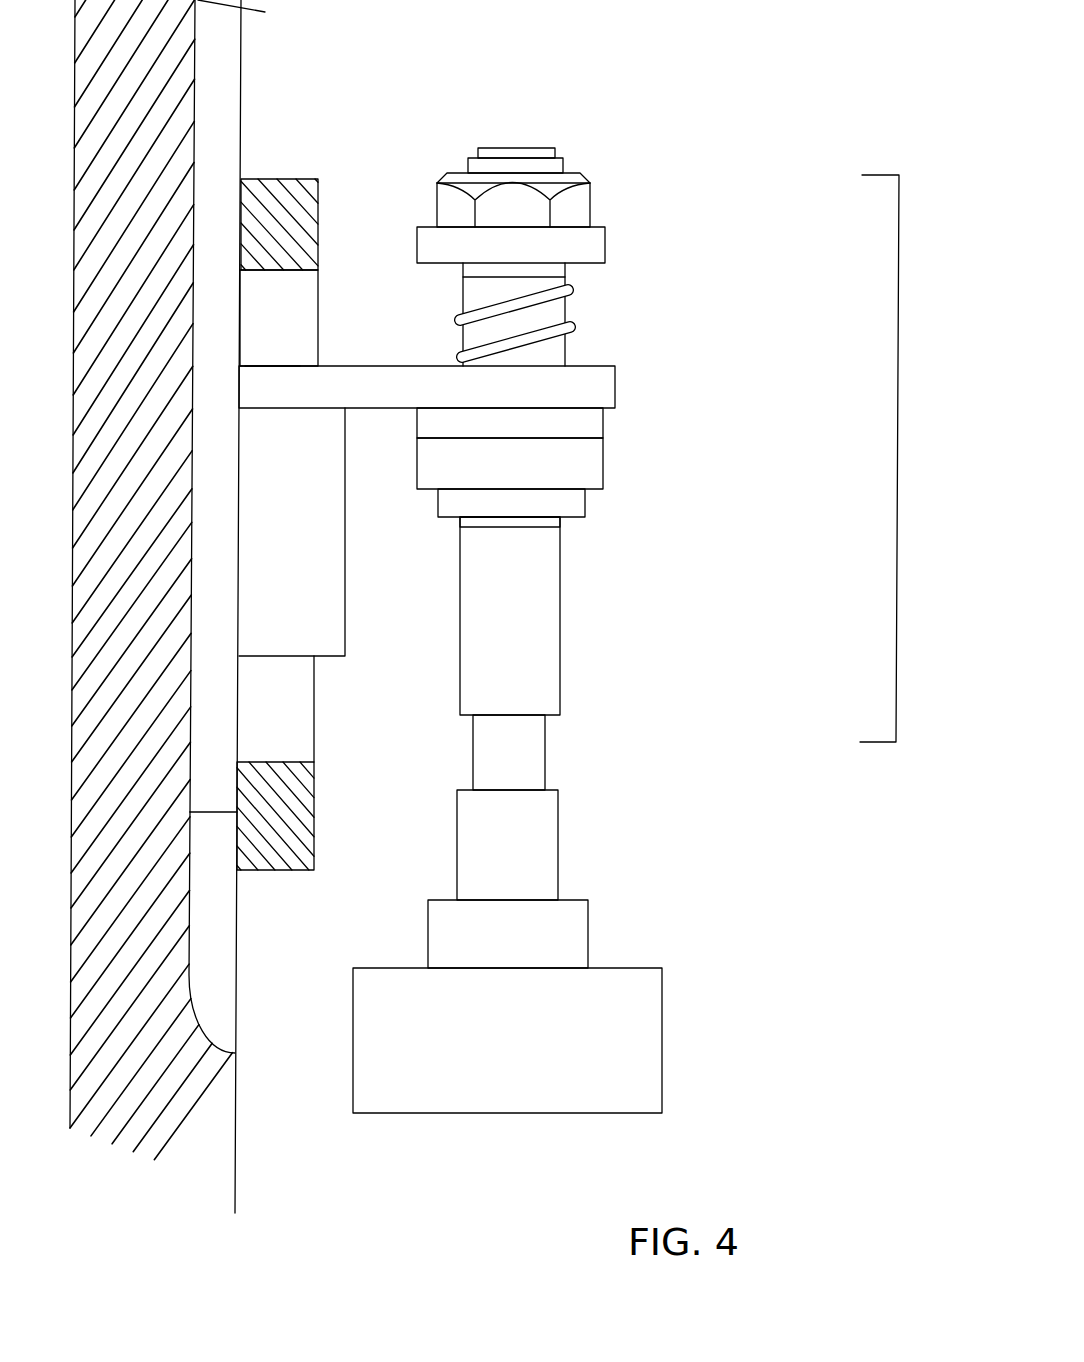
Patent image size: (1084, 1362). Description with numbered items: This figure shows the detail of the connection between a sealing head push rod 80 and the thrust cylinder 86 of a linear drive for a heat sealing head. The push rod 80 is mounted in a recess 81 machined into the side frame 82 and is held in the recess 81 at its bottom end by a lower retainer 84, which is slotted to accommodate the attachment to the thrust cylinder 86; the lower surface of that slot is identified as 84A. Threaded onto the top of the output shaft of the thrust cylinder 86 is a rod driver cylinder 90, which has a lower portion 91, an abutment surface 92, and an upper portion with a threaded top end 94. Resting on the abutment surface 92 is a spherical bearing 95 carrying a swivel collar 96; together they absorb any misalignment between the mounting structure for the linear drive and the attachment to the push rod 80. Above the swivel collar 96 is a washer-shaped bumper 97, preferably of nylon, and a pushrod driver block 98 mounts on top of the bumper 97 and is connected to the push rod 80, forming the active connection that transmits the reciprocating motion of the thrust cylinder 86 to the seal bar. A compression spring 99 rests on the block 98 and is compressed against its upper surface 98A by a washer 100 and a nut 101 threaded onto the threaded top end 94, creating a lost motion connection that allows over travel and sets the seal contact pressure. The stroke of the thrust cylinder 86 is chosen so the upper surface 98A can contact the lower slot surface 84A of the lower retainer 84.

The push rod 80 is at (226, 75).
The recess 81 is at (212, 973).
The side frame 82 is at (148, 164).
The lower retainer 84 is at (320, 183).
The lower surface of the slot in lower retainer 84A is at (280, 271).
The thrust cylinder 86 is at (662, 1040).
The rod driver cylinder 90 is at (910, 458).
The lower portion 91 is at (562, 660).
The abutment surface 92 is at (563, 538).
The threaded top end 94 is at (521, 163).
The spherical bearing 95 is at (587, 502).
The swivel collar 96 is at (603, 468).
The bumper 97 is at (603, 423).
The pushrod driver block 98 is at (615, 385).
The upper surface of pushrod driver block 98A is at (267, 363).
The compression spring 99 is at (572, 302).
The washer 100 is at (605, 243).
The nut 101 is at (600, 188).